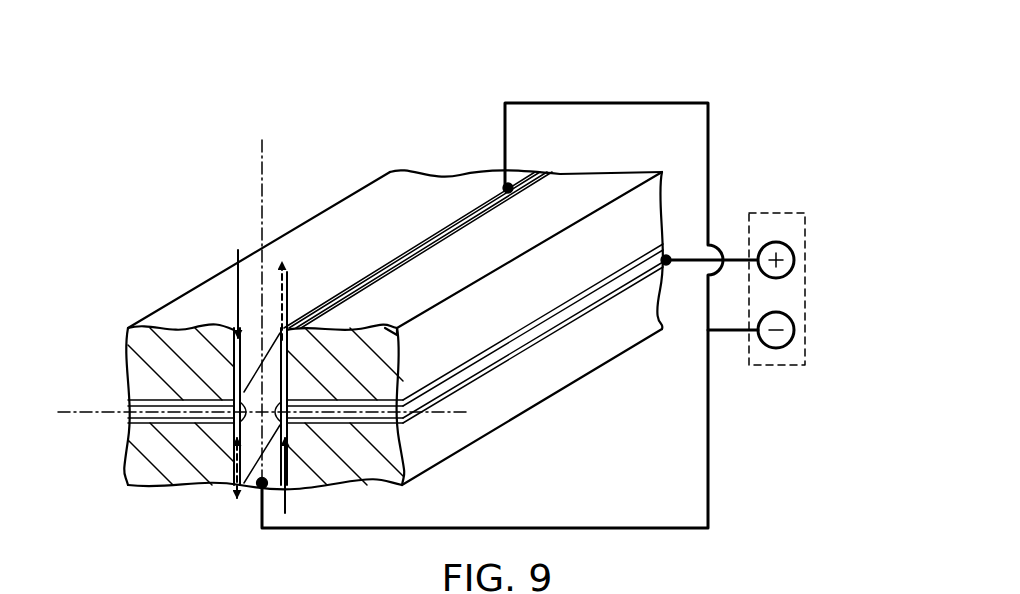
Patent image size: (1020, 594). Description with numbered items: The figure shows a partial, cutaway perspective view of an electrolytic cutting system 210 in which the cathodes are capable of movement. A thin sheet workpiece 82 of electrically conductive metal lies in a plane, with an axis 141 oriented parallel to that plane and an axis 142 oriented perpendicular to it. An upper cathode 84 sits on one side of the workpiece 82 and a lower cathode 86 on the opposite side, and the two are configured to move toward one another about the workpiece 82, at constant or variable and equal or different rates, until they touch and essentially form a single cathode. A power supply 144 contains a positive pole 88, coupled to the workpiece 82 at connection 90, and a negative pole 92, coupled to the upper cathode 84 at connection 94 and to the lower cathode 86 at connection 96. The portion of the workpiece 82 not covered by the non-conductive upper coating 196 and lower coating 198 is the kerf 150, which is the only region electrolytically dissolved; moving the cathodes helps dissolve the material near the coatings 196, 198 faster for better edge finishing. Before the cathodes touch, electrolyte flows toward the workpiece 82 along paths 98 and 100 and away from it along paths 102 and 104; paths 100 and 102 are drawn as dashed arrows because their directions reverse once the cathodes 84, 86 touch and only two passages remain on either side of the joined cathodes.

The electrolytic cutting system 210 is at (643, 84).
The workpiece 82 is at (562, 322).
The upper cathode 84 is at (490, 192).
The lower cathode 86 is at (240, 493).
The positive pole 88 is at (777, 243).
The connection 90 is at (669, 254).
The negative pole 92 is at (783, 350).
The connection 94 is at (512, 184).
The connection 96 is at (259, 492).
The path 98 is at (238, 250).
The path 100 is at (238, 490).
The path 102 is at (290, 300).
The path 104 is at (287, 508).
The axis 141 is at (97, 415).
The axis 142 is at (262, 165).
The power supply 144 is at (748, 222).
The kerf 150 is at (182, 340).
The upper coating 196 is at (128, 405).
The lower coating 198 is at (128, 422).